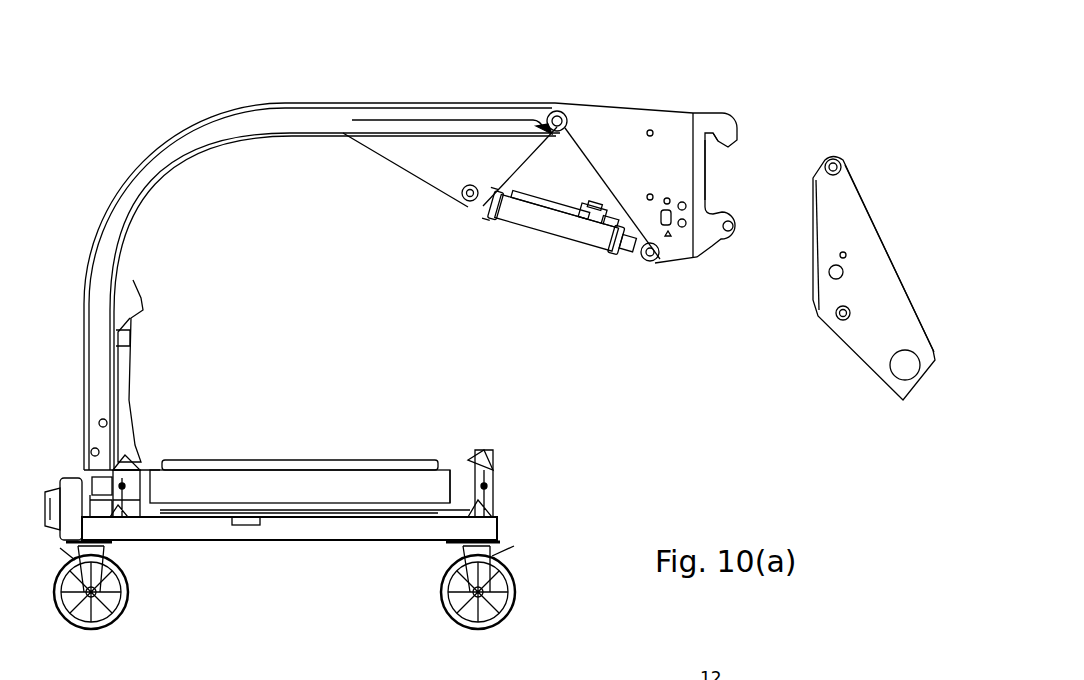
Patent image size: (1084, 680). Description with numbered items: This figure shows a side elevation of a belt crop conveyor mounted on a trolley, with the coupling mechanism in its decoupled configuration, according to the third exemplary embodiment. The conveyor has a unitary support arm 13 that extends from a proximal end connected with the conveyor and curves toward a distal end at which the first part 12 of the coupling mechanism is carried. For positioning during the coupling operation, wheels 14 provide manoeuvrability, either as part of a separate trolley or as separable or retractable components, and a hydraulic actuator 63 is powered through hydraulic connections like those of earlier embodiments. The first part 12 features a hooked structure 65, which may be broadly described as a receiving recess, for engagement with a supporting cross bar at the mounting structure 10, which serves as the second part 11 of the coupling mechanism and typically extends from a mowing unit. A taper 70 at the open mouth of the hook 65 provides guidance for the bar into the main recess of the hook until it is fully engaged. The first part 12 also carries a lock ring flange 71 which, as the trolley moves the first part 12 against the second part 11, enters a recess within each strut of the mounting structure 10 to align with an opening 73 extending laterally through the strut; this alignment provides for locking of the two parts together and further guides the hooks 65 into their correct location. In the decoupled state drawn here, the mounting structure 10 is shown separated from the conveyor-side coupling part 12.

The mounting structure 10 is at (880, 257).
The second part of the coupling mechanism 11 is at (852, 141).
The first part of the coupling mechanism 12 is at (703, 101).
The unitary support arm 13 is at (205, 140).
The wheels 14 is at (443, 600).
The hydraulic actuator 63 is at (560, 232).
The hooked structure 65 is at (717, 142).
The taper 70 is at (713, 135).
The lock ring flange 71 is at (725, 234).
The opening 73 is at (836, 283).